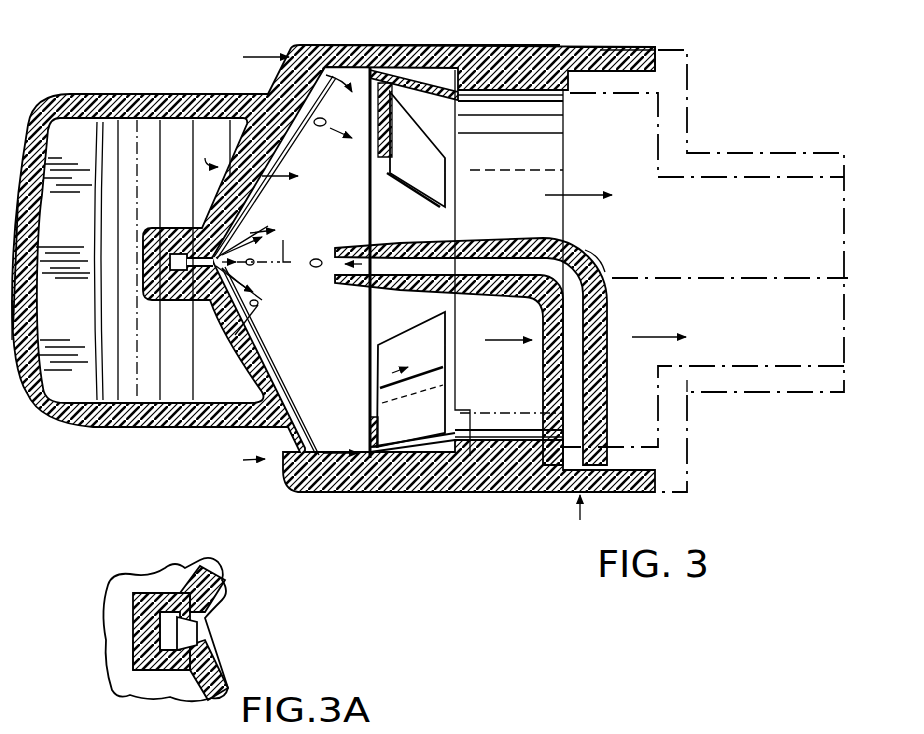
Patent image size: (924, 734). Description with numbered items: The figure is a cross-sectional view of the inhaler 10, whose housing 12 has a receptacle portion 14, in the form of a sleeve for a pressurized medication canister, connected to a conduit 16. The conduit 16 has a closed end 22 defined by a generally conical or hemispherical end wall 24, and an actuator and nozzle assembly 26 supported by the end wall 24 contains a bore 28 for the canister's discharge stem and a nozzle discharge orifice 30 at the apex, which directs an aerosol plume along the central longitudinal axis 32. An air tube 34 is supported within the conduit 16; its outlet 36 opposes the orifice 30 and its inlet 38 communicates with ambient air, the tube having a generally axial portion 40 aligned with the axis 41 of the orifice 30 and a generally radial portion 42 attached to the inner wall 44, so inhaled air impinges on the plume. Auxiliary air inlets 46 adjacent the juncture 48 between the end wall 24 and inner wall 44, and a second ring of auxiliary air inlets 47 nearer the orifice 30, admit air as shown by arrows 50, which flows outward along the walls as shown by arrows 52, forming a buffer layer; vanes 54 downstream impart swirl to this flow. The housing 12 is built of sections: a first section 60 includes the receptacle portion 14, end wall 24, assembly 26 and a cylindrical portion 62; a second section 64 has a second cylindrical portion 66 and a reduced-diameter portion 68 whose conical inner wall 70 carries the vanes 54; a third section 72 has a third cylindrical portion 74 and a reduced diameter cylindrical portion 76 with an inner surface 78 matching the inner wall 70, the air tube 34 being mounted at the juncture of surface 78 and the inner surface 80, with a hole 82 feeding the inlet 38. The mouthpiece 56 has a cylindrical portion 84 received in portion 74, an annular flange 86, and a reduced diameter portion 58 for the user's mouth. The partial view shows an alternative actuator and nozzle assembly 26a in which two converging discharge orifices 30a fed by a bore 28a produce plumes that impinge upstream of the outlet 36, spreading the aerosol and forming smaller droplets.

In FIG. 3, the inhaler 10 is at (115, 510).
In FIG. 3, the housing 12 is at (93, 425).
In FIG. 3, the receptacle portion 14 is at (128, 94).
In FIG. 3, the conduit 16 is at (463, 32).
In FIG. 3, the closed end 22 is at (212, 333).
In FIG. 3A, the closed end 22 is at (197, 577).
In FIG. 3, the end wall 24 is at (227, 348).
In FIG. 3A, the end wall 24 is at (214, 581).
In FIG. 3, the actuator and nozzle assembly 26 is at (160, 283).
In FIG. 3, the bore 28 is at (176, 258).
In FIG. 3, the nozzle discharge orifice 30 is at (204, 250).
In FIG. 3, the central longitudinal axis 32 is at (727, 276).
In FIG. 3, the air tube 34 is at (593, 258).
In FIG. 3, the outlet 36 is at (336, 275).
In FIG. 3, the inlet 38 is at (542, 505).
In FIG. 3, the axial portion 40 is at (490, 242).
In FIG. 3, the axis of the nozzle orifice 41 is at (267, 261).
In FIG. 3, the radial portion 42 is at (555, 395).
In FIG. 3, the inner wall 44 is at (548, 161).
In FIG. 3, the auxiliary air inlets 46 is at (290, 464).
In FIG. 3, the auxiliary air inlets 47 is at (258, 304).
In FIG. 3, the juncture 48 is at (325, 490).
In FIG. 3, the arrows 50 is at (253, 48).
In FIG. 3, the arrows 52 is at (304, 154).
In FIG. 3, the vanes 54 is at (390, 150).
In FIG. 3, the mouthpiece 56 is at (706, 142).
In FIG. 3, the reduced diameter portion 58 is at (774, 410).
In FIG. 3, the first section 60 is at (140, 428).
In FIG. 3, the generally cylindrical portion 62 is at (378, 44).
In FIG. 3, the second section 64 is at (465, 496).
In FIG. 3, the second generally cylindrical portion 66 is at (498, 45).
In FIG. 3, the reduced-diameter portion 68 is at (413, 470).
In FIG. 3, the inner wall 70 is at (440, 124).
In FIG. 3, the third section 72 is at (592, 43).
In FIG. 3, the third generally cylindrical portion 74 is at (646, 494).
In FIG. 3, the reduced diameter cylindrical portion 76 is at (503, 492).
In FIG. 3, the inner surface 78 is at (548, 129).
In FIG. 3, the inner surface 80 is at (648, 73).
In FIG. 3, the hole 82 is at (590, 478).
In FIG. 3, the generally cylindrical portion 84 is at (652, 49).
In FIG. 3, the annular flange 86 is at (688, 410).
In FIG. 3A, the actuator and nozzle assembly 26a is at (134, 654).
In FIG. 3A, the bore 28a is at (167, 628).
In FIG. 3A, the discharge orifices 30a is at (214, 657).